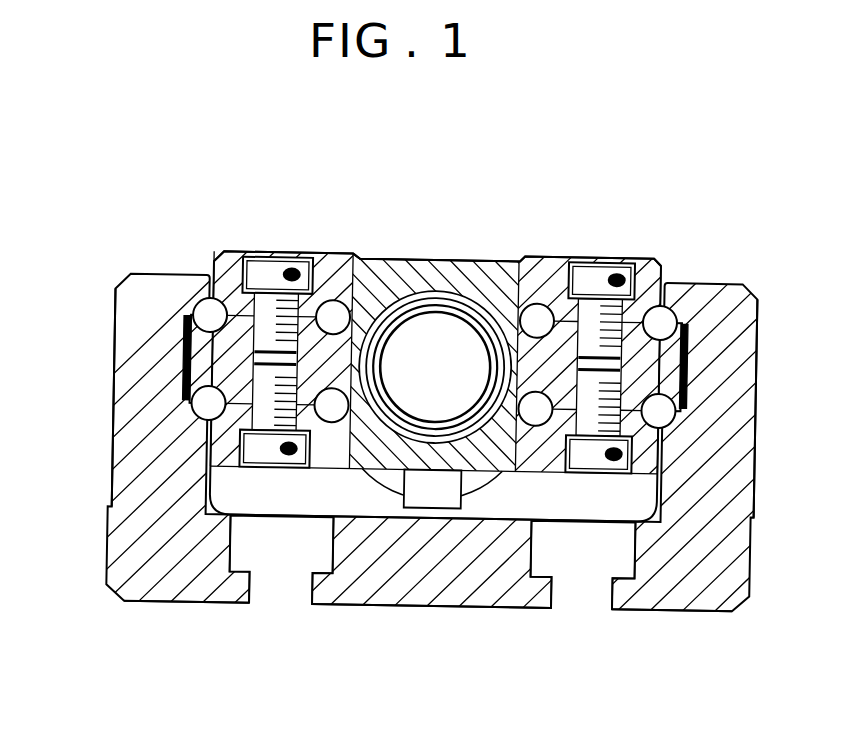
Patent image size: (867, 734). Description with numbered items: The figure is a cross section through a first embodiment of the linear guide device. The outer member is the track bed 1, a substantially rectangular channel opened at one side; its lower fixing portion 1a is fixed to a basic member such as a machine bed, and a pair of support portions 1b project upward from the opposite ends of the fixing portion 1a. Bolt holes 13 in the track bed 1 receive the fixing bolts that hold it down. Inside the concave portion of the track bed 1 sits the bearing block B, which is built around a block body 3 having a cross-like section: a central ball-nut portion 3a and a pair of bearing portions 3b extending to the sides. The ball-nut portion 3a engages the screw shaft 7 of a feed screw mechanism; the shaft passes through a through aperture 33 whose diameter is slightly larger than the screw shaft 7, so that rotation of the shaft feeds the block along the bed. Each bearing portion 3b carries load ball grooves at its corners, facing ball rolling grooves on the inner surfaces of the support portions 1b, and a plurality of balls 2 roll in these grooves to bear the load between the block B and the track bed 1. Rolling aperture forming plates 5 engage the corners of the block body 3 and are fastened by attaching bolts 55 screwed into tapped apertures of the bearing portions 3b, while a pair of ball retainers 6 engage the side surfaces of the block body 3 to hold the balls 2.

The track bed 1 is at (758, 508).
The fixing portion 1a is at (420, 602).
The support portions 1b is at (121, 482).
The balls 2 is at (199, 300).
The block body 3 is at (509, 260).
The ball-nut portion 3a is at (389, 261).
The bearing portions 3b is at (220, 363).
The rolling aperture forming plates 5 is at (334, 253).
The ball retainers 6 is at (183, 345).
The screw shaft 7 is at (435, 296).
The bolt holes 13 is at (263, 599).
The through aperture 33 is at (471, 312).
The attaching bolts 55 is at (268, 268).
The bearing block B is at (661, 248).